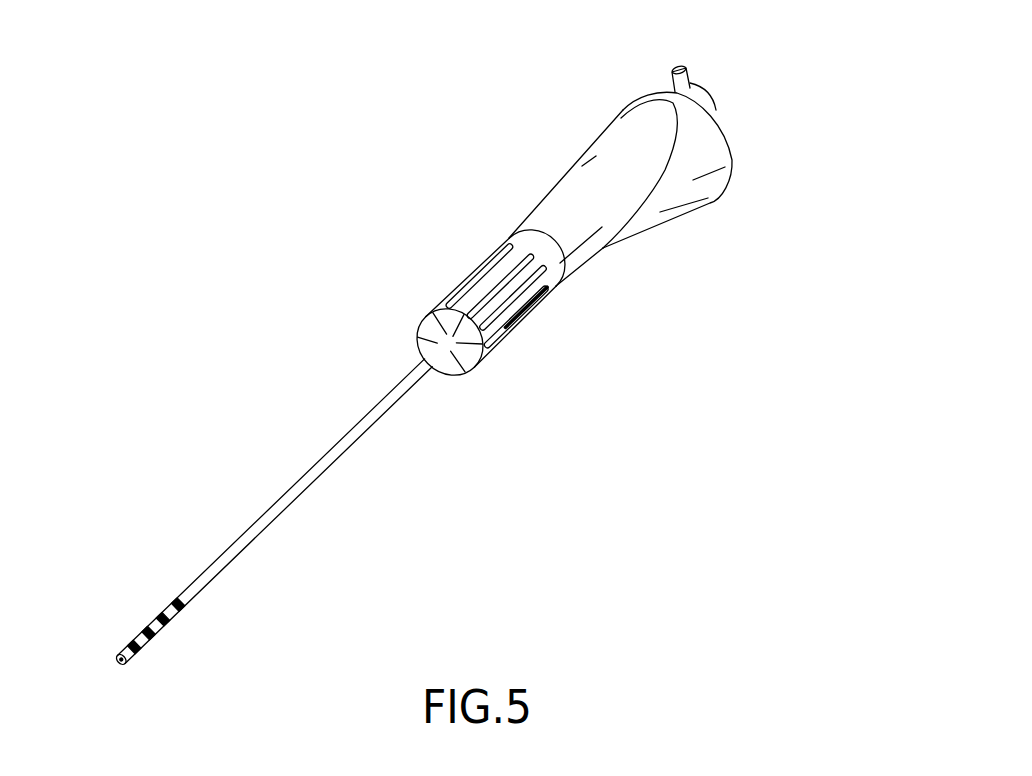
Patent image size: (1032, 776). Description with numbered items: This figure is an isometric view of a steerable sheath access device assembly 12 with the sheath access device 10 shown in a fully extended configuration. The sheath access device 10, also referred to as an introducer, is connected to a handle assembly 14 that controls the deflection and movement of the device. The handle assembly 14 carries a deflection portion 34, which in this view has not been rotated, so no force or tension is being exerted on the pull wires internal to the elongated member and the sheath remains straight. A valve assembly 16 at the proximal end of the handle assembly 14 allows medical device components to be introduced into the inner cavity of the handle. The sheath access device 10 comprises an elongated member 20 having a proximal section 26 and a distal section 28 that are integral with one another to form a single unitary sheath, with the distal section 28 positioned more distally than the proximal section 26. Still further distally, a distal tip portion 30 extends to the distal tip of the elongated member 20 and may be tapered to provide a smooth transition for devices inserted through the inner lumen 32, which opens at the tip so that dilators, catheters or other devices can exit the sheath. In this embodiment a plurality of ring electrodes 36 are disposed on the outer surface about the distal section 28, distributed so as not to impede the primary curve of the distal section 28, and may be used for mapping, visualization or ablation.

The sheath access device 10 is at (162, 378).
The steerable sheath access device assembly 12 is at (287, 188).
The handle assembly 14 is at (530, 178).
The valve assembly 16 is at (738, 108).
The elongated member 20 is at (288, 467).
The proximal section 26 is at (343, 453).
The distal section 28 is at (147, 623).
The distal tip portion 30 is at (130, 663).
The inner lumen 32 is at (115, 660).
The deflection portion 34 is at (508, 335).
The ring electrodes 36 is at (162, 627).